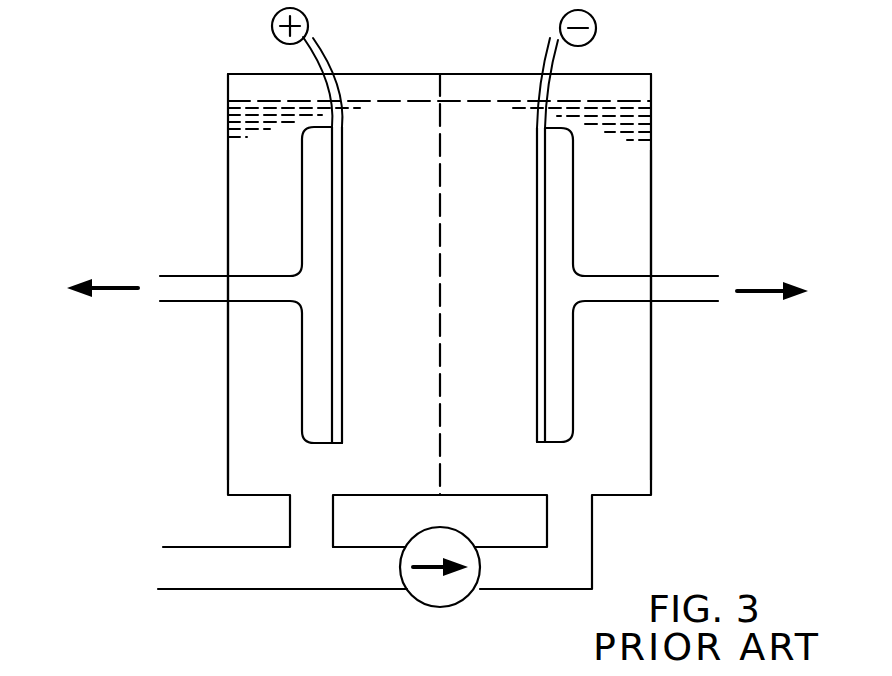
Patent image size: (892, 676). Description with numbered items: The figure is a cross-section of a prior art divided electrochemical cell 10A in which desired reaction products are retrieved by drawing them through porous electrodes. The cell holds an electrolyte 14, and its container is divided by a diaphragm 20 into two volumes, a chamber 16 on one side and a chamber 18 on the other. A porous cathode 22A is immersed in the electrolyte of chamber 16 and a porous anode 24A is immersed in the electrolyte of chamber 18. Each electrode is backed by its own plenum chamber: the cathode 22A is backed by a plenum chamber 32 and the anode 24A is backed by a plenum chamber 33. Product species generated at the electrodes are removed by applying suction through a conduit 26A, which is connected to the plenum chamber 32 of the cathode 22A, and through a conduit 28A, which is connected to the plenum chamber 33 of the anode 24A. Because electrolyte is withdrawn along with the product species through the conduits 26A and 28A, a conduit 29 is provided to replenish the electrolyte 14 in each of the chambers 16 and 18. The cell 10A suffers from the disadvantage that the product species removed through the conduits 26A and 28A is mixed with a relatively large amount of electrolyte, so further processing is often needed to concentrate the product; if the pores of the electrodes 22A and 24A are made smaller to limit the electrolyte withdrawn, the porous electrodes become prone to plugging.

The cell 10A is at (150, 70).
The electrolyte 14 is at (262, 463).
The chamber 16 is at (260, 92).
The chamber 18 is at (618, 90).
The diaphragm 20 is at (443, 117).
The cathode 22A is at (333, 373).
The anode 24A is at (548, 378).
The conduit 26A is at (190, 298).
The conduit 28A is at (685, 290).
The conduit 29 is at (308, 517).
The plenum chamber 32 is at (303, 208).
The plenum chamber 33 is at (573, 200).